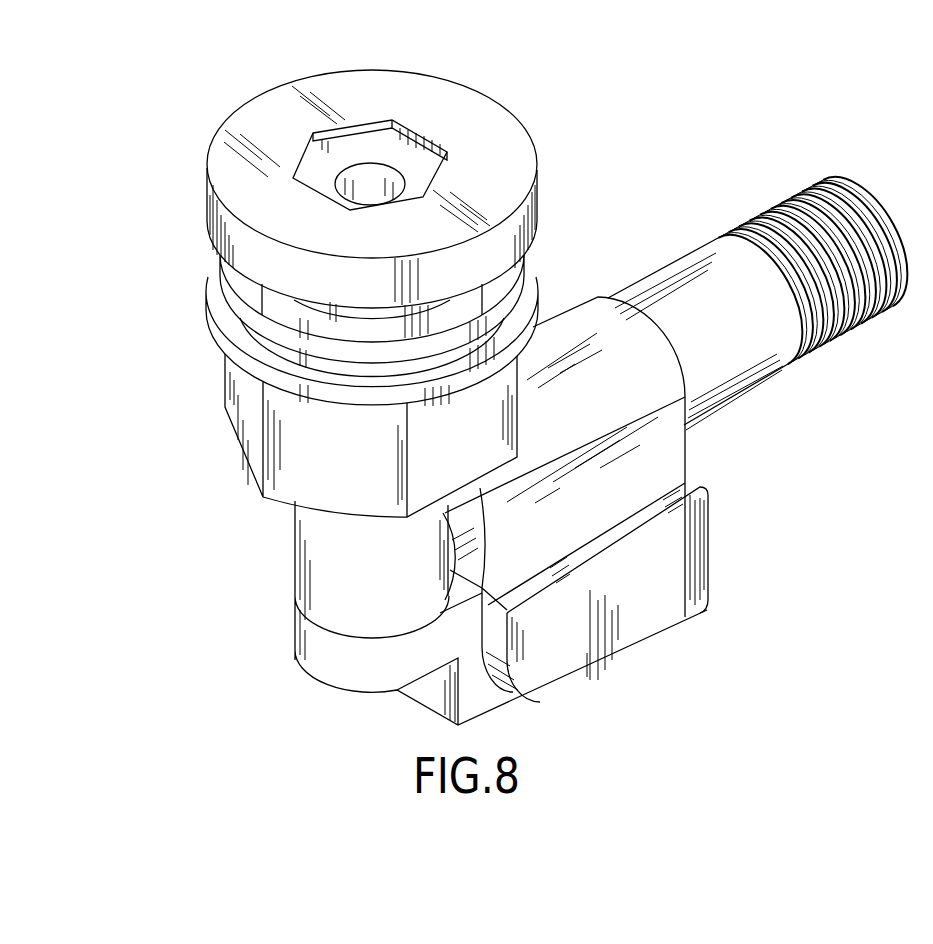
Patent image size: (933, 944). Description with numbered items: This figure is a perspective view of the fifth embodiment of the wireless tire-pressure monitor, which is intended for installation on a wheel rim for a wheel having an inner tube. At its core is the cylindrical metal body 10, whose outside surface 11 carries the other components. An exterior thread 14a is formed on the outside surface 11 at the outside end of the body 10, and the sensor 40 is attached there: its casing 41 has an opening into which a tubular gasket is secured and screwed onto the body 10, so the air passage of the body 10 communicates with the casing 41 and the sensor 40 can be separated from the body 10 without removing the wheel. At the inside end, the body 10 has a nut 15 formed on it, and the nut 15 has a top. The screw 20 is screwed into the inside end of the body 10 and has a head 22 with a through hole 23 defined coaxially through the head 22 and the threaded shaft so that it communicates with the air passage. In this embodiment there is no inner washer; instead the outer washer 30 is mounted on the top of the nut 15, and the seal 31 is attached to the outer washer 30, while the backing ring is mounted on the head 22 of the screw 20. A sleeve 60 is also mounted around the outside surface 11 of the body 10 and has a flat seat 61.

The body 10 is at (275, 553).
The outside surface 11 is at (657, 272).
The exterior thread 14a is at (825, 178).
The nut 15 is at (245, 423).
The screw 20 is at (419, 178).
The head 22 is at (503, 163).
The through hole 23 is at (366, 172).
The outer washer 30 is at (220, 342).
The seal 31 is at (233, 282).
The sensor 40 is at (675, 555).
The casing 41 is at (690, 575).
The sleeve 60 is at (594, 446).
The flat seat 61 is at (587, 543).